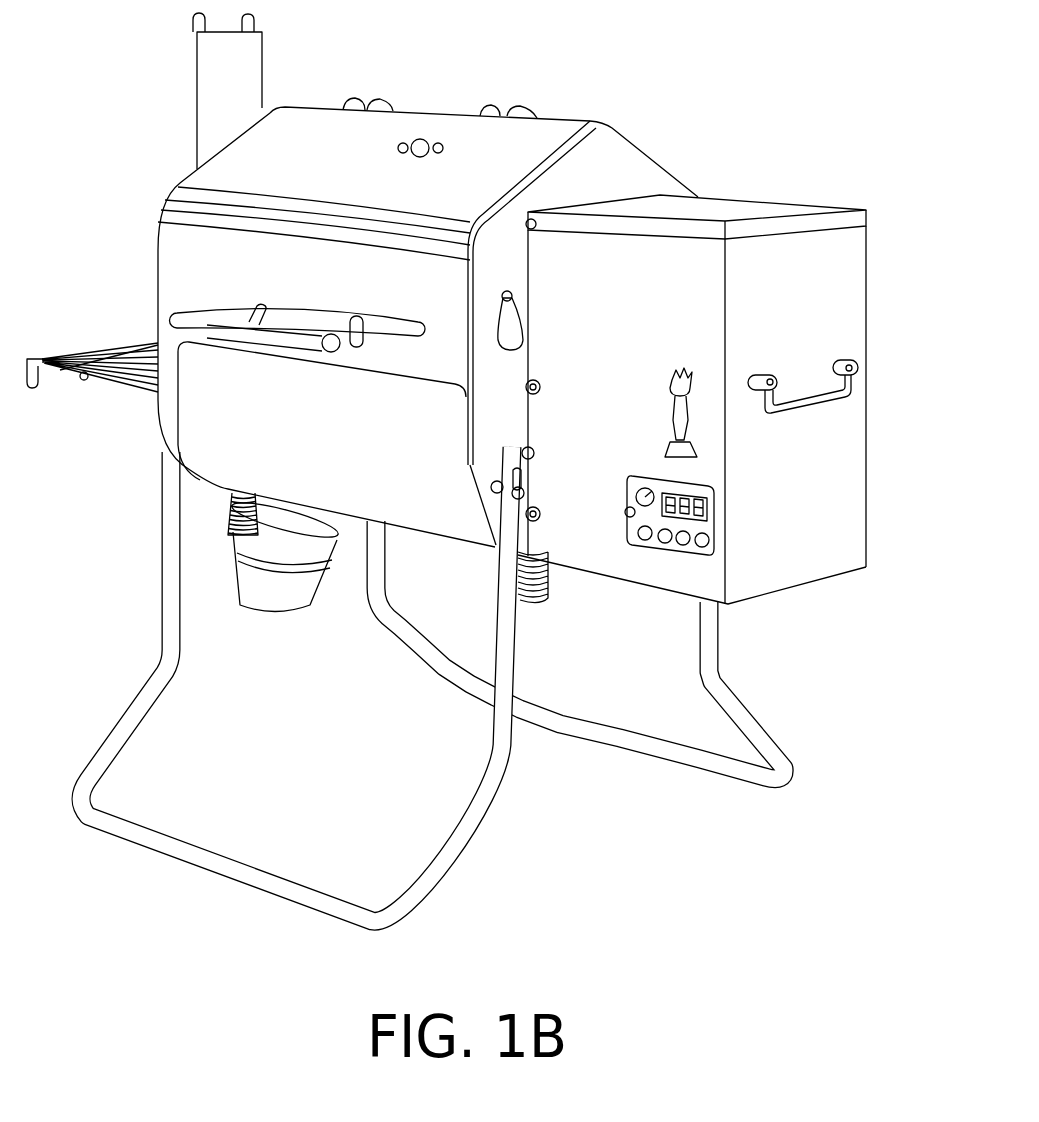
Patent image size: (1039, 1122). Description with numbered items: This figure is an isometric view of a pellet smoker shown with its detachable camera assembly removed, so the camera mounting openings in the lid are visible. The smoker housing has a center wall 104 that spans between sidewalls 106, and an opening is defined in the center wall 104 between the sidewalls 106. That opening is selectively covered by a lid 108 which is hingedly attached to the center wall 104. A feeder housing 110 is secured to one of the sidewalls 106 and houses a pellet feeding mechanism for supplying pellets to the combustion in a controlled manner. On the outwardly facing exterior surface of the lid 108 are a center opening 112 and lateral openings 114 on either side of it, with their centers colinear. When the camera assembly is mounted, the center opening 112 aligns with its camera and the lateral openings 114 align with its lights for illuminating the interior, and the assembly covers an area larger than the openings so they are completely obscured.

The center wall 104 is at (323, 436).
The sidewalls 106 is at (160, 345).
The lid 108 is at (293, 133).
The feeder housing 110 is at (843, 294).
The center opening 112 is at (430, 141).
The lateral openings 114 is at (408, 142).